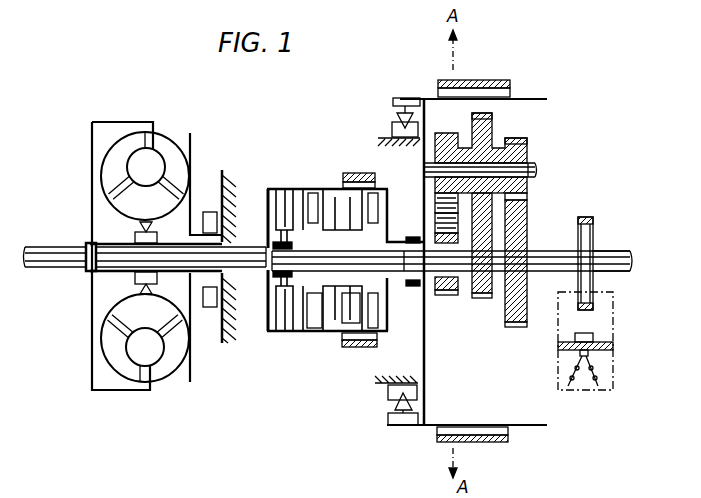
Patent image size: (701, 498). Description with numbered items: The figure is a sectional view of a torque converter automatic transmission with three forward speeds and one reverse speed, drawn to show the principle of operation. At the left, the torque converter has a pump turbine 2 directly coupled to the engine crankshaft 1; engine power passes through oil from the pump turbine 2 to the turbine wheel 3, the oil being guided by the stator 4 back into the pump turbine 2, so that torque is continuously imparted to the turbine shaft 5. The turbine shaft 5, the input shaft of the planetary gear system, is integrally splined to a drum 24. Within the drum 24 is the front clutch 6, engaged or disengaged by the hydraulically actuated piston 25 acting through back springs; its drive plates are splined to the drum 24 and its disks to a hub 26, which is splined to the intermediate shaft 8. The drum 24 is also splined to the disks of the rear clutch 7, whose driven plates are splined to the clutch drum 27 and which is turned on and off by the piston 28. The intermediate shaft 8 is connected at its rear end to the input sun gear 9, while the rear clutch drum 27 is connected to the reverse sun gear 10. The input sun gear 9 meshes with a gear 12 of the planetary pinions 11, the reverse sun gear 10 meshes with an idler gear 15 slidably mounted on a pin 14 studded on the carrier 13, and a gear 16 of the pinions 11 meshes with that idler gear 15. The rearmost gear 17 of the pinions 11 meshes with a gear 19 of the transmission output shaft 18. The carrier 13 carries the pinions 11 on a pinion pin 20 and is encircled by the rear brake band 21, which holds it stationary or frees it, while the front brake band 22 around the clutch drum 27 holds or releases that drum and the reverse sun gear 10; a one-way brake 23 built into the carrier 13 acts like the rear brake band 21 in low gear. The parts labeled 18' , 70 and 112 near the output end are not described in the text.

The engine crankshaft 1 is at (42, 263).
The pump turbine 2 is at (178, 163).
The turbine wheel 3 is at (128, 140).
The stator 4 is at (128, 208).
The turbine shaft 5 is at (243, 258).
The multiple disk clutch (front clutch) 6 is at (300, 331).
The multiple disk clutch (rear clutch) 7 is at (345, 334).
The intermediate shaft 8 is at (402, 286).
The input sun gear 9 is at (481, 300).
The reverse sun gear 10 is at (442, 296).
The planetary gear train pinions 11 is at (528, 150).
The gear (of pinions) 12 is at (490, 114).
The carrier 13 is at (423, 182).
The pin 14 is at (437, 206).
The idler gear 15 is at (437, 222).
The gear (of pinions) 16 is at (456, 134).
The rearmost gear (of pinions) 17 is at (528, 139).
The transmission output shaft 18 is at (613, 244).
The output coupling 18' is at (608, 341).
The gear (of output shaft) 19 is at (528, 218).
The pinion pin 20 is at (536, 168).
The braking band (rear brake band) 21 is at (488, 80).
The band (front brake band) 22 is at (360, 172).
The one-way brake 23 is at (390, 126).
The drum (front clutch drum) 24 is at (283, 188).
The hydraulically actuated piston 25 is at (316, 194).
The hub 26 is at (268, 302).
The clutch drum (rear clutch drum) 27 is at (356, 348).
The piston 28 is at (380, 331).
The spring 70 is at (572, 393).
The gear 112 is at (606, 214).